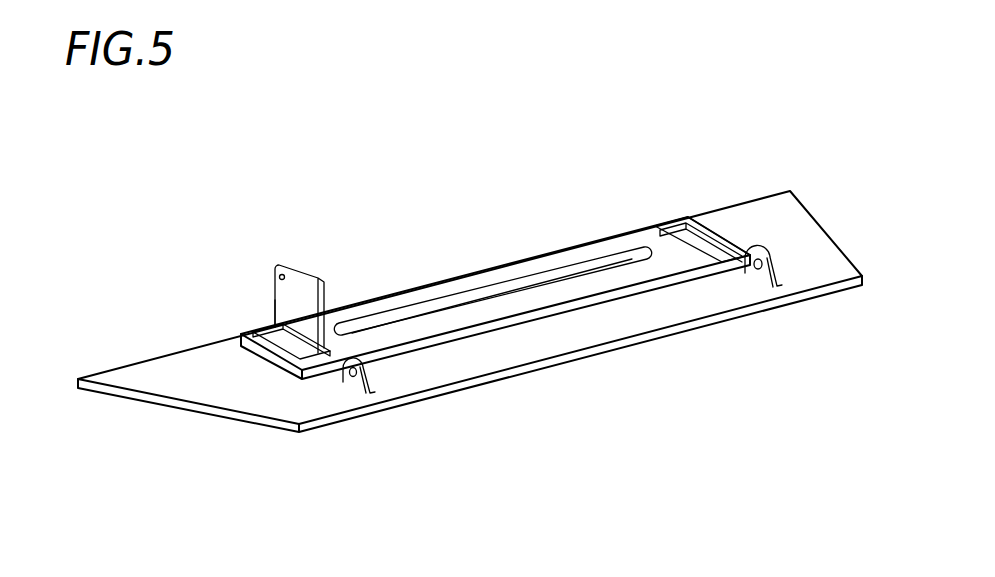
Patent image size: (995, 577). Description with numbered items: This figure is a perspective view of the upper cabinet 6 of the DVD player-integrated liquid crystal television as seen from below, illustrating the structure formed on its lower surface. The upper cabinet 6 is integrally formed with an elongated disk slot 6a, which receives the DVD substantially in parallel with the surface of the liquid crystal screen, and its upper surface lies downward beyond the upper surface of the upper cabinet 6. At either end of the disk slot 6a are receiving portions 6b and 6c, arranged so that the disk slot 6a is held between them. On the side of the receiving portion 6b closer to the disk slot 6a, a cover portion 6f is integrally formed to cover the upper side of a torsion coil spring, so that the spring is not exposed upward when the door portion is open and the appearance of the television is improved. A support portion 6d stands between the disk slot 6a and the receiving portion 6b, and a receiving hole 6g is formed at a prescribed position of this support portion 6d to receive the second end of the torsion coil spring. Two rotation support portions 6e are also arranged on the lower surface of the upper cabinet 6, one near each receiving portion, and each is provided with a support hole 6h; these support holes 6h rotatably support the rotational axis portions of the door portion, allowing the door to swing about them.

The upper cabinet 6 is at (792, 210).
The disk slot 6a is at (519, 286).
The receiving portion 6b is at (262, 330).
The receiving portion 6c is at (701, 232).
The support portion 6d is at (312, 283).
The rotation support portion 6e is at (366, 395).
The cover portion 6f is at (292, 331).
The receiving hole 6g is at (284, 275).
The support hole 6h is at (351, 378).